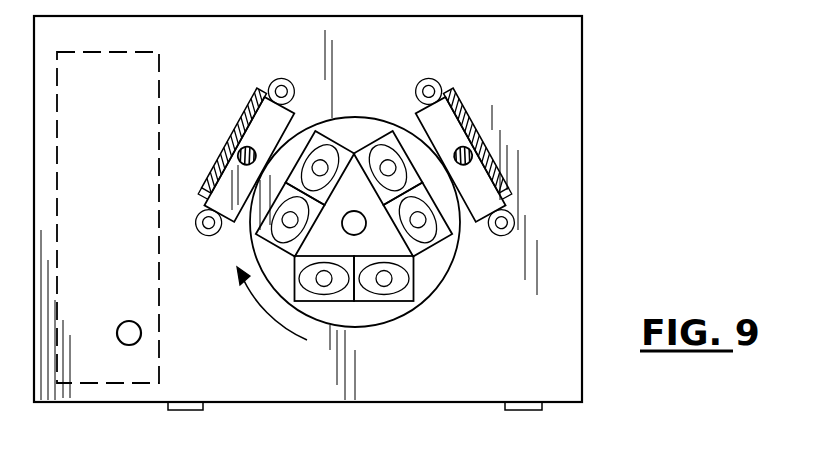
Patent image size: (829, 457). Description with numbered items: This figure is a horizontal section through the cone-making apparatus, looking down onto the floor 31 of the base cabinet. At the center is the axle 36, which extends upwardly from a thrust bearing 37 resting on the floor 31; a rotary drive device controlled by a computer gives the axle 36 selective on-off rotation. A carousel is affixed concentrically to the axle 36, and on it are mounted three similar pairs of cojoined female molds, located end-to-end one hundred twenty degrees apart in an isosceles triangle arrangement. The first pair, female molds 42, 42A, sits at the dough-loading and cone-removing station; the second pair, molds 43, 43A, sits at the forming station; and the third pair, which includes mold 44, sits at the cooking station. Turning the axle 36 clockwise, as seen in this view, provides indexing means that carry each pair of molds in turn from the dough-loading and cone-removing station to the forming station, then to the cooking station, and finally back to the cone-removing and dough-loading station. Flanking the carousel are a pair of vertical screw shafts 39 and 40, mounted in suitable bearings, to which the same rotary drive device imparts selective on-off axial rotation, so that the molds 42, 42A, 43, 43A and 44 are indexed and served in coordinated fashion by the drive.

The floor 31 is at (618, 205).
The axle 36 is at (354, 235).
The thrust bearing 37 is at (432, 272).
The vertical screw shaft 39 is at (243, 150).
The vertical screw shaft 40 is at (472, 150).
The female mold 42 is at (312, 285).
The female mold 42A is at (390, 290).
The female mold 43 is at (277, 227).
The female mold 43A is at (325, 147).
The female mold 44 is at (380, 150).